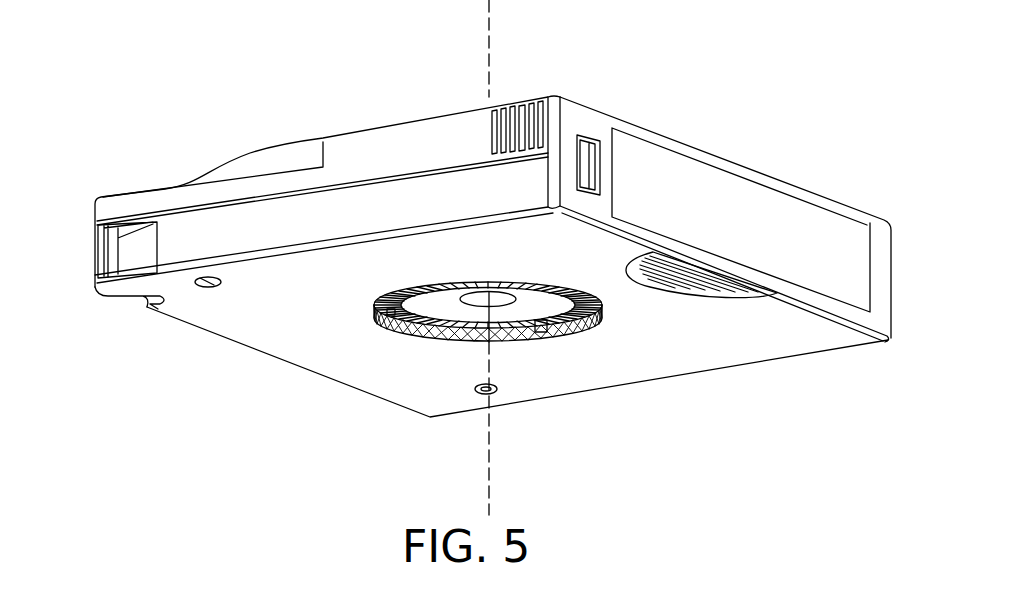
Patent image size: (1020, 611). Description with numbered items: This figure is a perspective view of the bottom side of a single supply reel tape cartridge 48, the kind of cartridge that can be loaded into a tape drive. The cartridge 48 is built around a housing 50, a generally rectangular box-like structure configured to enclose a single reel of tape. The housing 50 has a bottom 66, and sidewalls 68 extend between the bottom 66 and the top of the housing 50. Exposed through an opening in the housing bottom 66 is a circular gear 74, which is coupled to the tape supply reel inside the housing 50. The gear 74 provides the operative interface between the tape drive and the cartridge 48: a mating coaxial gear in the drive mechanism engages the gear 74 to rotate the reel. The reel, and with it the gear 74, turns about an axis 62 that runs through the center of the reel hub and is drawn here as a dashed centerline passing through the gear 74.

The single supply reel tape cartridge 48 is at (138, 365).
The housing 50 is at (858, 213).
The axis 62 is at (490, 20).
The bottom 66 is at (767, 343).
The sidewalls 68 is at (118, 212).
The circular gear 74 is at (537, 333).